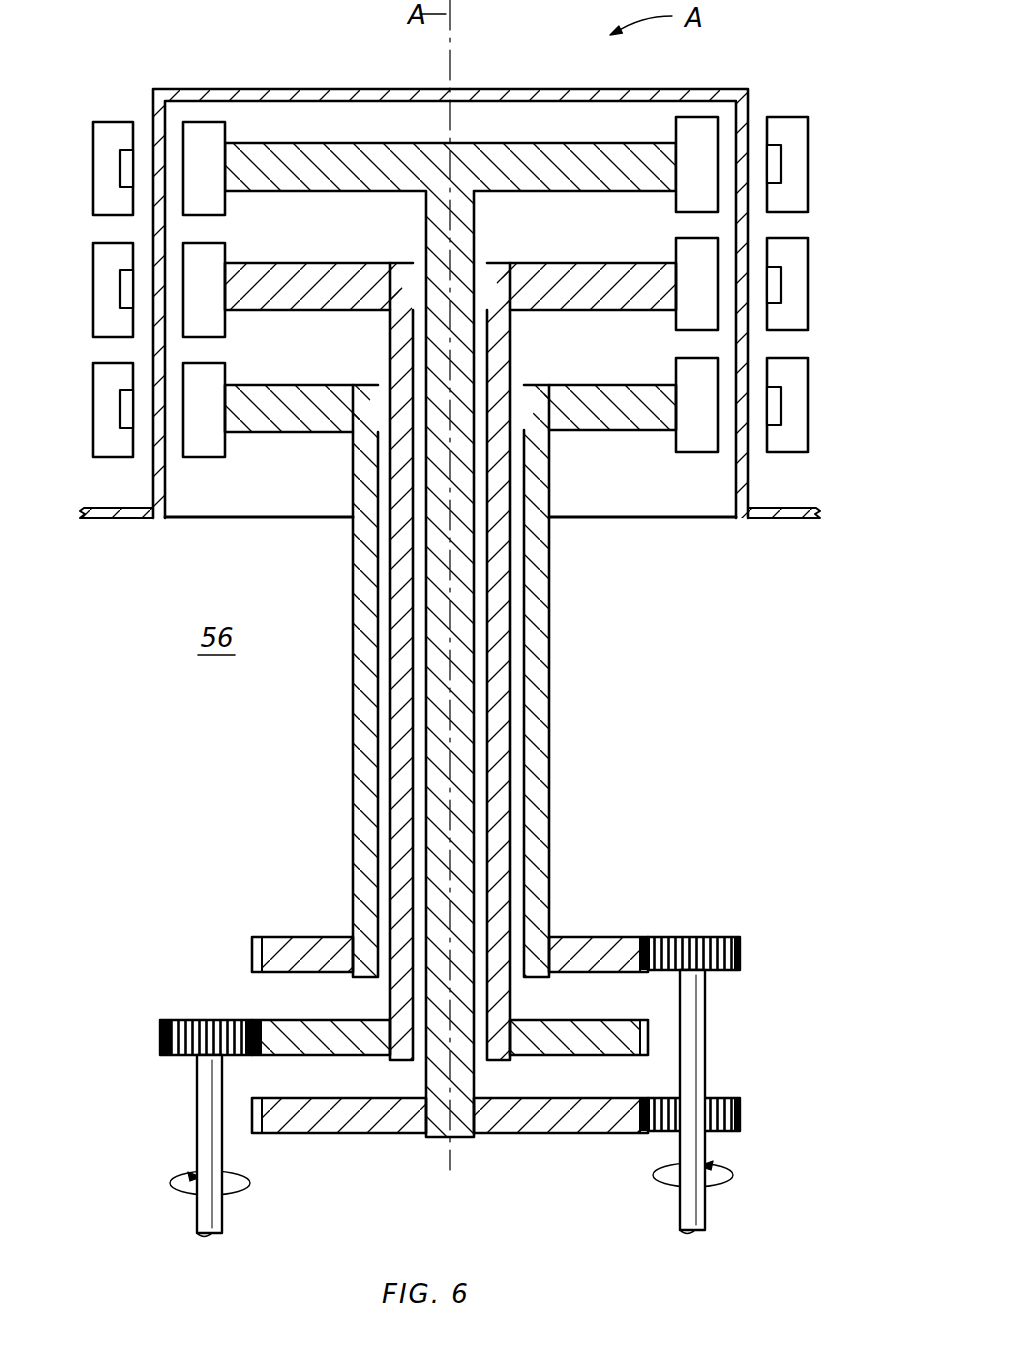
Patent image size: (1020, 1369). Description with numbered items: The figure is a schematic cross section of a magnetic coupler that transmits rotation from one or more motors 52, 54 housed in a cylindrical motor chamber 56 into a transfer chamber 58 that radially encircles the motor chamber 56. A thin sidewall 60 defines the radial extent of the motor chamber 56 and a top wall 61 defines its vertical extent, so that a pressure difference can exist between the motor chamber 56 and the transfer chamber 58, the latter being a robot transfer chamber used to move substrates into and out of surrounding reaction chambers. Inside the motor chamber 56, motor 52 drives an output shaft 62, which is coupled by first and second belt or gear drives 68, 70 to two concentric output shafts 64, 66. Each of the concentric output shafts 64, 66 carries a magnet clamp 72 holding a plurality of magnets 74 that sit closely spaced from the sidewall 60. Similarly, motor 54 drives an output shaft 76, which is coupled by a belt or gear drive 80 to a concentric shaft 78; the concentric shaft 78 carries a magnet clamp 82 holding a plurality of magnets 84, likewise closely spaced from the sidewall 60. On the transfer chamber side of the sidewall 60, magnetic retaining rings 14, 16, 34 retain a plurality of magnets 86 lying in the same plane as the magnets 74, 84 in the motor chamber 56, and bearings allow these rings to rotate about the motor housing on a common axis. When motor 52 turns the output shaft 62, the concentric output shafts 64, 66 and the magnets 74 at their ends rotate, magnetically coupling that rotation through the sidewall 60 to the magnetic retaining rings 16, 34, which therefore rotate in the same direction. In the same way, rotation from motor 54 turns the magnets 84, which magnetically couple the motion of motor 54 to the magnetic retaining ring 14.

The magnetic retaining ring 14 is at (808, 294).
The magnetic retaining ring 16 is at (808, 404).
The magnetic retaining ring 34 is at (808, 148).
The motor 52 is at (757, 1216).
The motor 54 is at (153, 1219).
The cylindrical motor chamber 56 is at (216, 638).
The transfer chamber 58 is at (34, 242).
The sidewall 60 is at (152, 491).
The top wall 61 is at (520, 88).
The output shaft 62 is at (705, 1150).
The concentric output shaft 64 is at (426, 1077).
The concentric output shaft 66 is at (549, 620).
The belt or gear drive 68 is at (632, 1150).
The belt or gear drive 70 is at (655, 937).
The magnet clamp 72 is at (278, 143).
The magnets 74 is at (676, 122).
The output shaft 76 is at (197, 1122).
The concentric shaft 78 is at (390, 995).
The belt or gear drive 80 is at (275, 1020).
The magnet clamp 82 is at (278, 263).
The magnets 84 is at (676, 243).
The magnets 86 is at (125, 150).